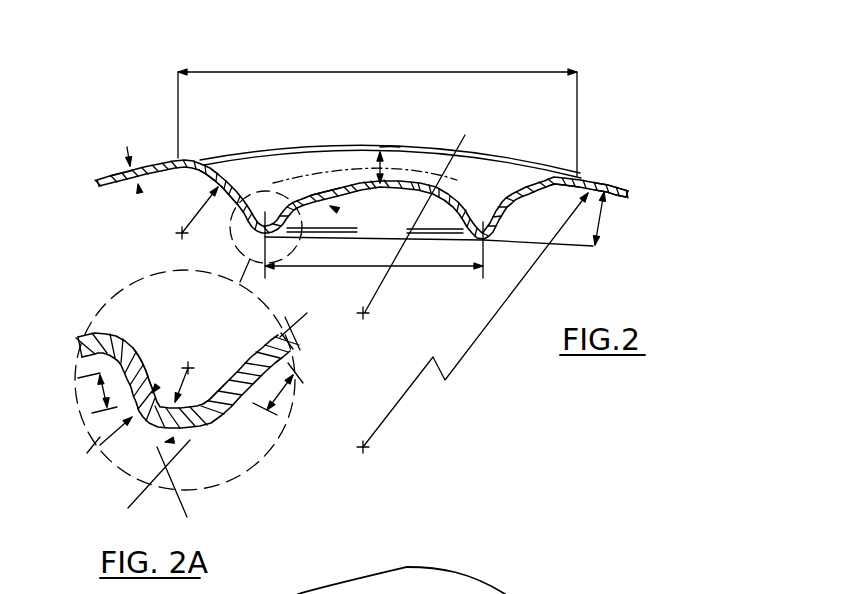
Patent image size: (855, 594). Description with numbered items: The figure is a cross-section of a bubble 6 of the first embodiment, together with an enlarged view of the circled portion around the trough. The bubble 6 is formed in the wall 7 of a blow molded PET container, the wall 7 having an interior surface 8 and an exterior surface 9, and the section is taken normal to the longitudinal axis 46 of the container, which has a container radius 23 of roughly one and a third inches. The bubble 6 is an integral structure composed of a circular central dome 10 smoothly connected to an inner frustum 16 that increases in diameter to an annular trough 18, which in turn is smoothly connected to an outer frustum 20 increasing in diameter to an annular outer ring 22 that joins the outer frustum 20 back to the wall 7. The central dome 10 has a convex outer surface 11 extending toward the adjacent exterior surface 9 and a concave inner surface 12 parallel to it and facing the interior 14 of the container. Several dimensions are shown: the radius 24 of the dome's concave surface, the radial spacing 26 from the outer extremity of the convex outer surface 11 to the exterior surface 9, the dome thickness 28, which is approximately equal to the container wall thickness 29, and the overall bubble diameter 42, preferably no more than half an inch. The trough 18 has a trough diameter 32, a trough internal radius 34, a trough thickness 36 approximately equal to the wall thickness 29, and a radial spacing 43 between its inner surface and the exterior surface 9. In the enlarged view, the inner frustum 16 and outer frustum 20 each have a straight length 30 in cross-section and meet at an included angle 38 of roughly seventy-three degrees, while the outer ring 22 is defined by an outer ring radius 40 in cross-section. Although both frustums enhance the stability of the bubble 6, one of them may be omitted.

In FIG. 2, the bubble 6 is at (427, 183).
In FIG. 2, the wall 7 is at (630, 194).
In FIG. 2, the interior surface 8 is at (562, 196).
In FIG. 2, the exterior surface 9 is at (607, 186).
In FIG. 2, the central dome 10 is at (440, 203).
In FIG. 2, the convex outer surface 11 is at (399, 152).
In FIG. 2, the concave inner surface 12 is at (262, 158).
In FIG. 2, the interior 14 is at (428, 311).
In FIG. 2A, the inner frustum 16 is at (243, 367).
In FIG. 2A, the annular trough 18 is at (210, 398).
In FIG. 2A, the outer frustum 20 is at (152, 393).
In FIG. 2, the outer ring 22 is at (224, 181).
In FIG. 2, the container radius 23 is at (478, 343).
In FIG. 2, the radius of central dome 24 is at (384, 292).
In FIG. 2, the radial spacing 26 is at (378, 152).
In FIG. 2, the central dome thickness 28 is at (330, 206).
In FIG. 2, the container wall thickness 29 is at (138, 184).
In FIG. 2A, the frustum length 30 is at (100, 392).
In FIG. 2, the trough diameter 32 is at (443, 268).
In FIG. 2A, the trough internal radius 34 is at (188, 368).
In FIG. 2A, the trough thickness 36 is at (100, 445).
In FIG. 2A, the included angle of frustums 38 is at (165, 442).
In FIG. 2, the outer ring radius 40 is at (182, 234).
In FIG. 2, the bubble diameter 42 is at (388, 72).
In FIG. 2, the radial spacing 43 is at (605, 222).
In FIG. 2, the longitudinal axis 46 is at (364, 448).